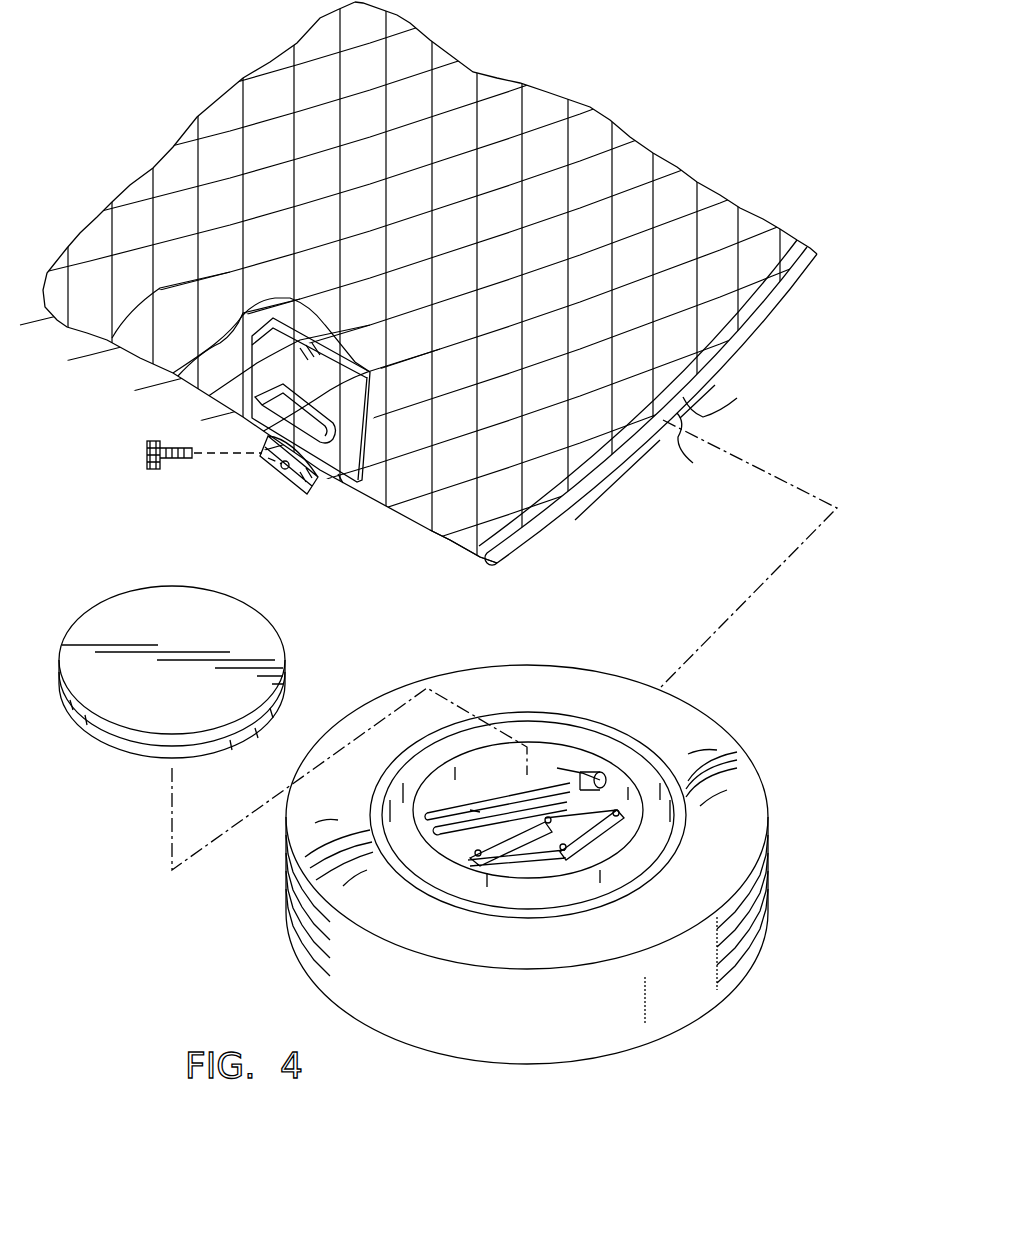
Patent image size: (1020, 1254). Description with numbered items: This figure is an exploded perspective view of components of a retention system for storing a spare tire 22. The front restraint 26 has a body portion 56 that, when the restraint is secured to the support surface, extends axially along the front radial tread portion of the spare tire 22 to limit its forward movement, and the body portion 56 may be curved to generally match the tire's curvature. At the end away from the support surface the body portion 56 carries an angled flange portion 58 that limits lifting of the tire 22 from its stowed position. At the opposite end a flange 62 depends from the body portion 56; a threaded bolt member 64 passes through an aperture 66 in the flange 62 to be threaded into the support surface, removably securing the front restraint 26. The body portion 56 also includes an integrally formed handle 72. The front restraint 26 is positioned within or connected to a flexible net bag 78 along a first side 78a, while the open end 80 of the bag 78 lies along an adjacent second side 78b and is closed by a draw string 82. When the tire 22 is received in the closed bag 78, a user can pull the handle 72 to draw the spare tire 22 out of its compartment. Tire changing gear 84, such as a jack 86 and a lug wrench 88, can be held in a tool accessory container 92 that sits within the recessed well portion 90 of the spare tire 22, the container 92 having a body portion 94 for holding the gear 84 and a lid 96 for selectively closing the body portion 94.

The spare tire 22 is at (718, 718).
The front restraint 26 is at (341, 480).
The body portion 56 is at (255, 367).
The flange portion 58 is at (298, 350).
The flange 62 is at (272, 495).
The threaded bolt member 64 is at (178, 463).
The aperture 66 is at (283, 468).
The handle 72 is at (270, 417).
The flexible bag 78 is at (597, 108).
The first side 78a is at (409, 523).
The second side 78b is at (563, 523).
The open end 80 is at (615, 460).
The draw string 82 is at (707, 383).
The tire changing gear 84 is at (542, 788).
The jack 86 is at (527, 853).
The lug wrench 88 is at (575, 772).
The recessed well portion 90 is at (581, 832).
The tool accessory container 92 is at (470, 895).
The body portion 94 is at (573, 895).
The lid 96 is at (263, 638).